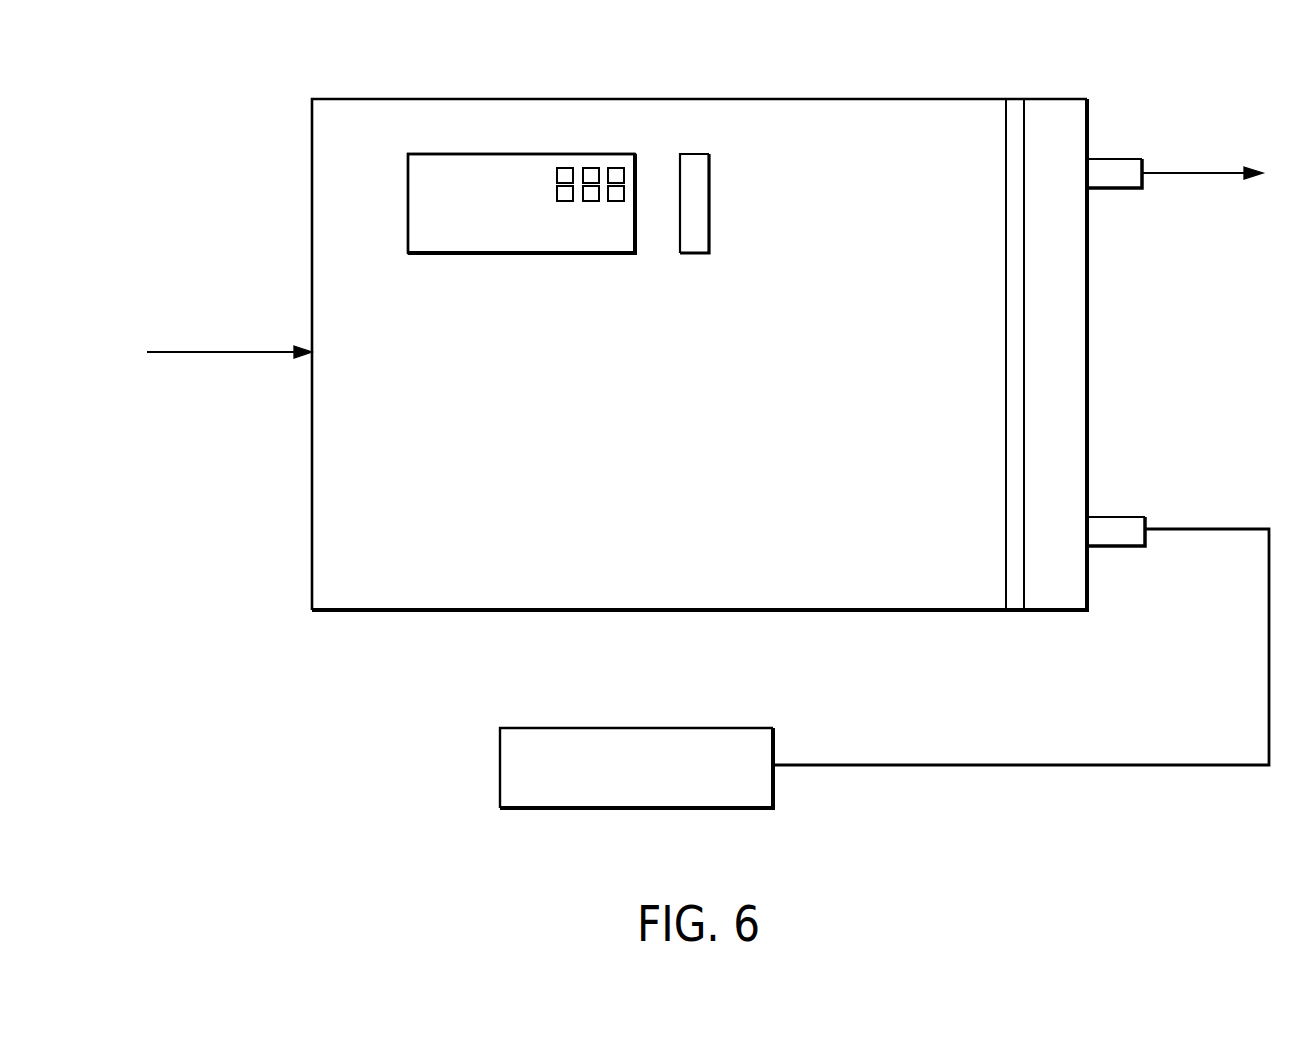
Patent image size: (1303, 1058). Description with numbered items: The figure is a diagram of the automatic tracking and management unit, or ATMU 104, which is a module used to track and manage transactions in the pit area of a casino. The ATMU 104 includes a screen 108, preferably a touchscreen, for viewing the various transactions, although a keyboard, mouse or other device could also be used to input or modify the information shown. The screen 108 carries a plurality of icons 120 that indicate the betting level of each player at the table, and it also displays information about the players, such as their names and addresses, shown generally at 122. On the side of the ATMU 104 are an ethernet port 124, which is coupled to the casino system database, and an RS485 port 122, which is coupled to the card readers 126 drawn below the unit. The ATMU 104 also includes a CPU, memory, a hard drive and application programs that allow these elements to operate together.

The ATMU 104 is at (913, 94).
The screen 108 is at (537, 153).
The icons 120 is at (604, 173).
The player information / RS485 port 122 is at (422, 218).
The ethernet port 124 is at (1119, 157).
The card readers 126 is at (697, 727).